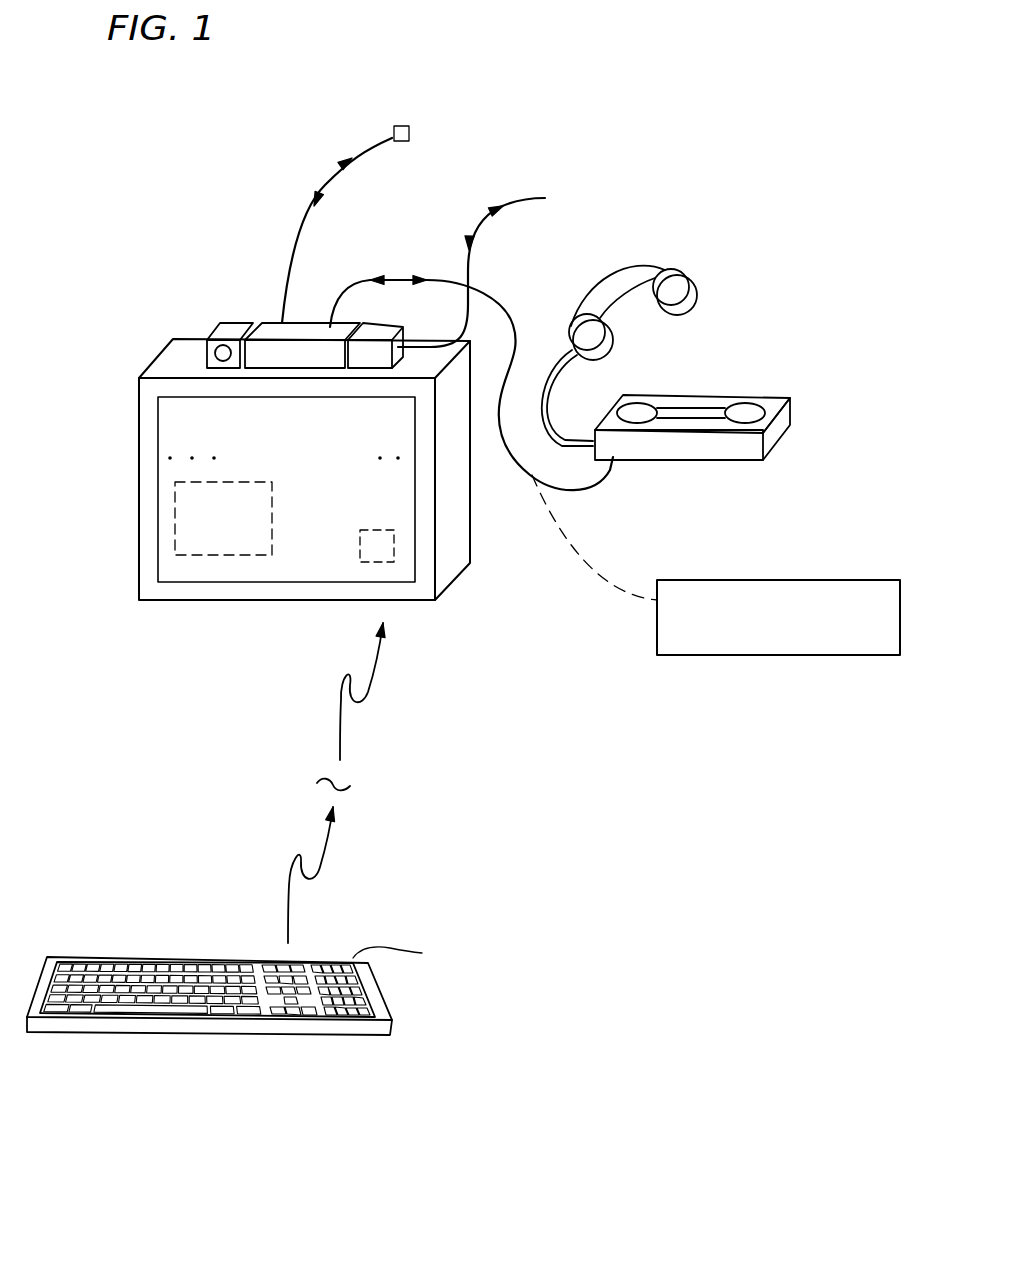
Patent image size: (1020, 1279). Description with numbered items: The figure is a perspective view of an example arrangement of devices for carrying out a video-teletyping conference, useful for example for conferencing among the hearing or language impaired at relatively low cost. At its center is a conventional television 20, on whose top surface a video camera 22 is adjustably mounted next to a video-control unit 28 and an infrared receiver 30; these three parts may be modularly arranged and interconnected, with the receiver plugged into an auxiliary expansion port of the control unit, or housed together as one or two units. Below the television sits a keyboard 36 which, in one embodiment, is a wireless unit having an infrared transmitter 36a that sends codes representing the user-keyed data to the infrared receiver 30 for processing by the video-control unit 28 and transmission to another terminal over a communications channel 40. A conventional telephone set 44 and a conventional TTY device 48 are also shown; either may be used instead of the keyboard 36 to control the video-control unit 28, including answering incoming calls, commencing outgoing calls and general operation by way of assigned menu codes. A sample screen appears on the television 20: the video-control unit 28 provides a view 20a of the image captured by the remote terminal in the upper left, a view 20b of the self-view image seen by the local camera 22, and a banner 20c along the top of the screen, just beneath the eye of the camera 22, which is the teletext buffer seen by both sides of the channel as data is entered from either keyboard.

The television 20 is at (138, 590).
The view of the image captured by the remote terminal 20a is at (198, 515).
The view of the self-view image 20b is at (386, 552).
The banner 20c is at (172, 413).
The video camera 22 is at (210, 335).
The video-control unit 28 is at (264, 323).
The infrared receiver 30 is at (480, 213).
The keyboard 36 is at (397, 1028).
The infrared transmitter 36a is at (320, 963).
The communications channel 40 is at (316, 196).
The telephone set 44 is at (790, 410).
The TTY device 48 is at (795, 655).